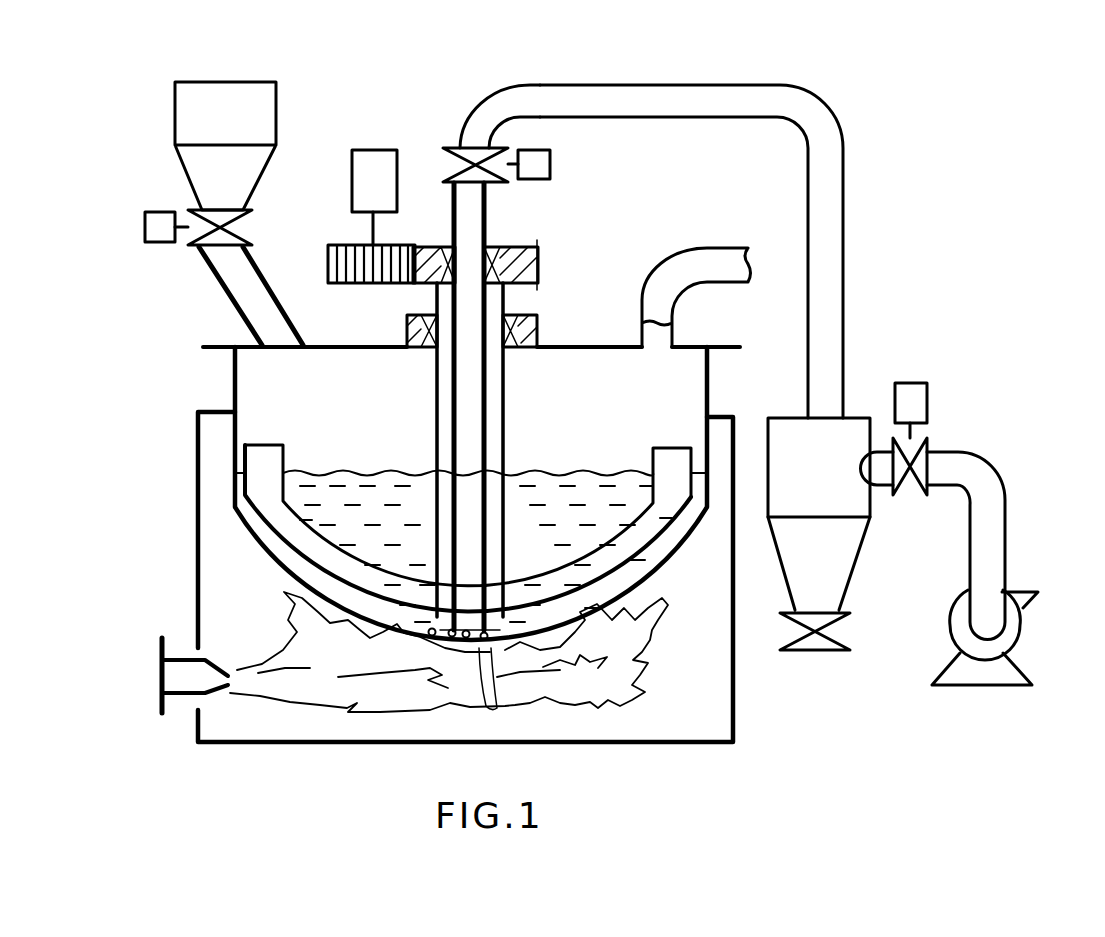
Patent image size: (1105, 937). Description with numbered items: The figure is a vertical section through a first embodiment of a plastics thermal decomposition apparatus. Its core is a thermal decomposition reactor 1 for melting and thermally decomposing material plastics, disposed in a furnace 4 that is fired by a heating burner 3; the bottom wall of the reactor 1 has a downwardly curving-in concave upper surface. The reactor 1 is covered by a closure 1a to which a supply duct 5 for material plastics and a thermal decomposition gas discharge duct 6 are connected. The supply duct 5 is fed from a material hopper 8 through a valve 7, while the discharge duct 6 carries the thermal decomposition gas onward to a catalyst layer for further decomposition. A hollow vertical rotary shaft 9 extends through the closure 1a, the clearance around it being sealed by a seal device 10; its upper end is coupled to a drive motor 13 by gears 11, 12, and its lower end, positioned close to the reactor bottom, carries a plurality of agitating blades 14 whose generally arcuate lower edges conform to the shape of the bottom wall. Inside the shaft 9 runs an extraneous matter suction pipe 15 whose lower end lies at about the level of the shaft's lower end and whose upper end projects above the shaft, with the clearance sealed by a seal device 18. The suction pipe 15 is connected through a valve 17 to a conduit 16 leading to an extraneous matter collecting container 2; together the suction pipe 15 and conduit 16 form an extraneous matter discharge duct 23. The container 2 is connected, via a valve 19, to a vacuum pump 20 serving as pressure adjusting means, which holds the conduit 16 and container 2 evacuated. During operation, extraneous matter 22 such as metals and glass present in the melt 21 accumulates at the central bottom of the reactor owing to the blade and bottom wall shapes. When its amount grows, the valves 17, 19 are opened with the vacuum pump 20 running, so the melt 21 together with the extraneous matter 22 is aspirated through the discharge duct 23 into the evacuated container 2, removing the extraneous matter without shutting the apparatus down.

The thermal decomposition reactor 1 is at (232, 383).
The closure 1a is at (598, 347).
The extraneous matter collecting container 2 is at (770, 400).
The heating burner 3 is at (180, 700).
The furnace 4 is at (313, 745).
The supply duct 5 is at (222, 290).
The thermal decomposition gas discharge duct 6 is at (668, 262).
The valve 7 is at (242, 228).
The material hopper 8 is at (282, 85).
The hollow vertical rotary shaft 9 is at (503, 408).
The seal device 10 is at (512, 315).
The gear 11 is at (520, 247).
The gear 12 is at (352, 283).
The drive motor 13 is at (378, 150).
The agitating blades 14 is at (292, 528).
The extraneous matter suction pipe 15 is at (452, 410).
The conduit 16 is at (665, 85).
The valve 17 is at (456, 146).
The seal device 18 is at (447, 247).
The valve 19 is at (925, 442).
The vacuum pump 20 is at (1018, 658).
The melt 21 is at (578, 490).
The extraneous matter 22 is at (485, 685).
The extraneous matter discharge duct 23 is at (548, 85).